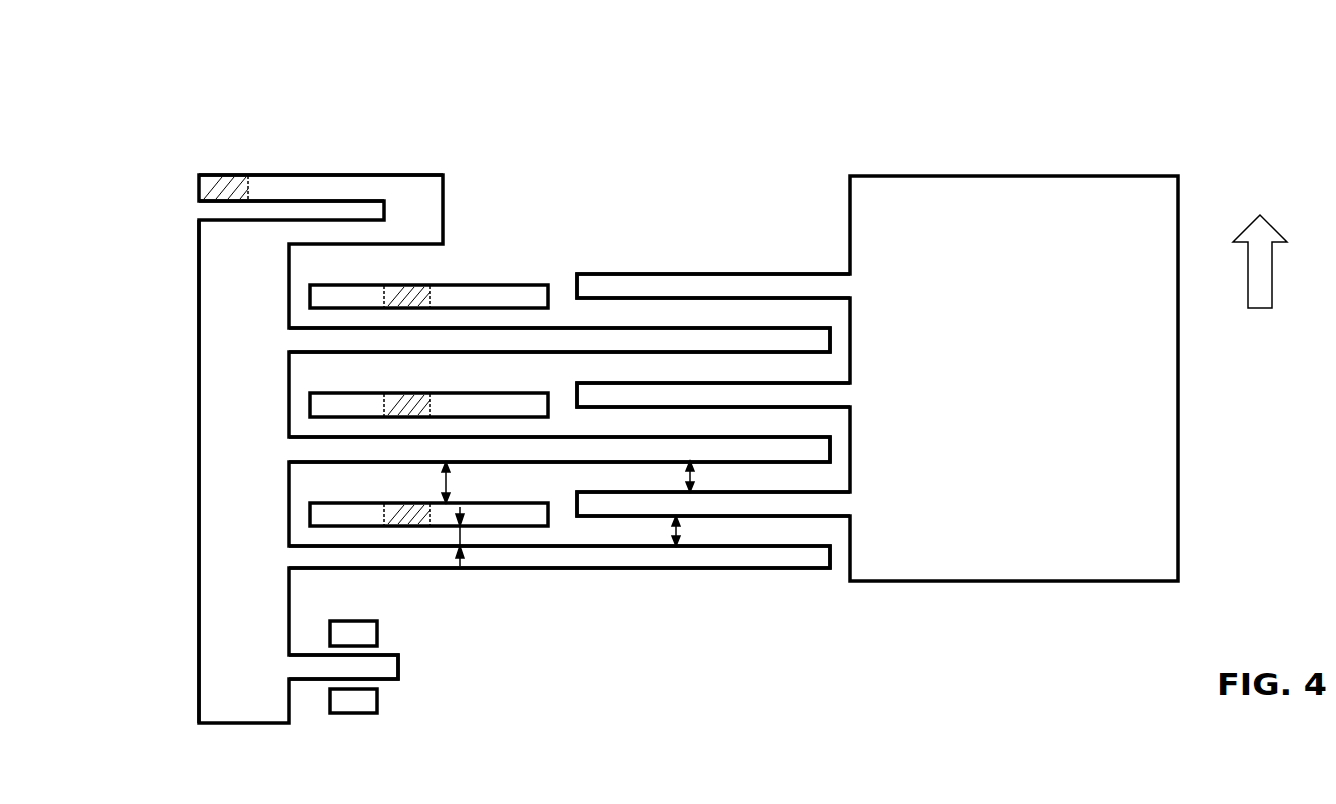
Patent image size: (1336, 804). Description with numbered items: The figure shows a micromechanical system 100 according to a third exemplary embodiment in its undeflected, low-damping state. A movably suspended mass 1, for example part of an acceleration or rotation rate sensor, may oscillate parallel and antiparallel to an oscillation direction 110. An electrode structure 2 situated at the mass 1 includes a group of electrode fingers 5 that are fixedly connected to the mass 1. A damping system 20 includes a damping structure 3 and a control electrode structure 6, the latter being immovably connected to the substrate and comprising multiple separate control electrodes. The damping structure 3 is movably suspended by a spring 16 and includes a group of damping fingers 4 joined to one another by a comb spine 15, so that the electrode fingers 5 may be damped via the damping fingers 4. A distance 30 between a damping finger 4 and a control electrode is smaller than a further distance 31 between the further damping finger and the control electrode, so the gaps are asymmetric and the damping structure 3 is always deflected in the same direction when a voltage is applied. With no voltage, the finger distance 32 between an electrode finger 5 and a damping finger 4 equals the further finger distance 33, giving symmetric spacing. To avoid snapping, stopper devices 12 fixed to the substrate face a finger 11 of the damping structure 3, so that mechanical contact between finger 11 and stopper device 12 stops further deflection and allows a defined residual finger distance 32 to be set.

The micromechanical system 100 is at (223, 133).
The movably suspended mass 1 is at (1022, 393).
The electrode structure 2 is at (713, 416).
The electrode finger 5 is at (630, 287).
The damping structure 3 is at (252, 373).
The damping finger 4 is at (567, 342).
The control electrode structure 6 is at (333, 298).
The finger 11 is at (317, 667).
The stopper device 12 is at (377, 634).
The comb spine 15 is at (237, 435).
The spring 16 is at (323, 190).
The damping system 20 is at (538, 595).
The distance 30 is at (460, 536).
The further distance 31 is at (446, 483).
The finger distance 32 is at (670, 530).
The further finger distance 33 is at (692, 477).
The oscillation direction 110 is at (1262, 296).